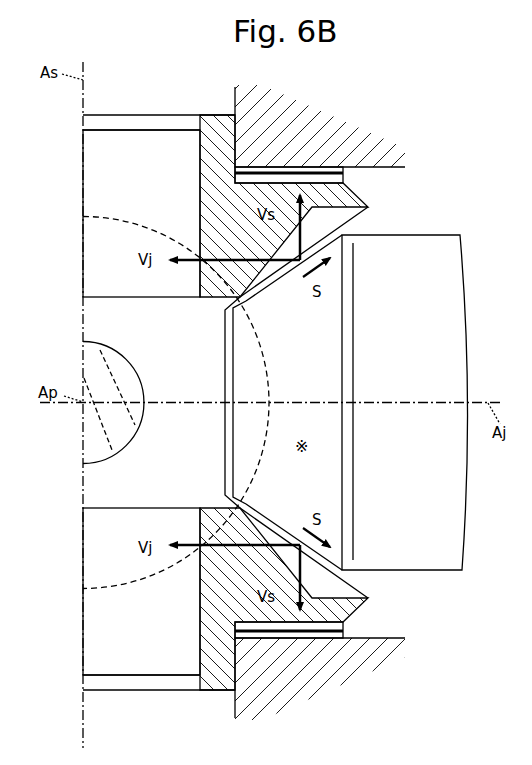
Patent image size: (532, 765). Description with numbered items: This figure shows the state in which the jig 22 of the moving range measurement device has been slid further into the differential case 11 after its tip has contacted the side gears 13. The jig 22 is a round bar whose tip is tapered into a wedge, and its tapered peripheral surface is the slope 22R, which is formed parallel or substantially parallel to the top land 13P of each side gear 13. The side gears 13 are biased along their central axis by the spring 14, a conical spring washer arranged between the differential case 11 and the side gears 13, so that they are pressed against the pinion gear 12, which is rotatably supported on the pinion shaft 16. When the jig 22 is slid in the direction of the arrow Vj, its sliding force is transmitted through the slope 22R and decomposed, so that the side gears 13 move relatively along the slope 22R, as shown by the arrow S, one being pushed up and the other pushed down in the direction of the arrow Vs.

The differential case 11 is at (316, 132).
The pinion gear 12 is at (121, 218).
The side gear 13 is at (115, 115).
The top land 13P is at (366, 222).
The spring 14 is at (346, 176).
The pinion shaft 16 is at (130, 365).
The jig 22 is at (446, 233).
The slope 22R is at (314, 362).